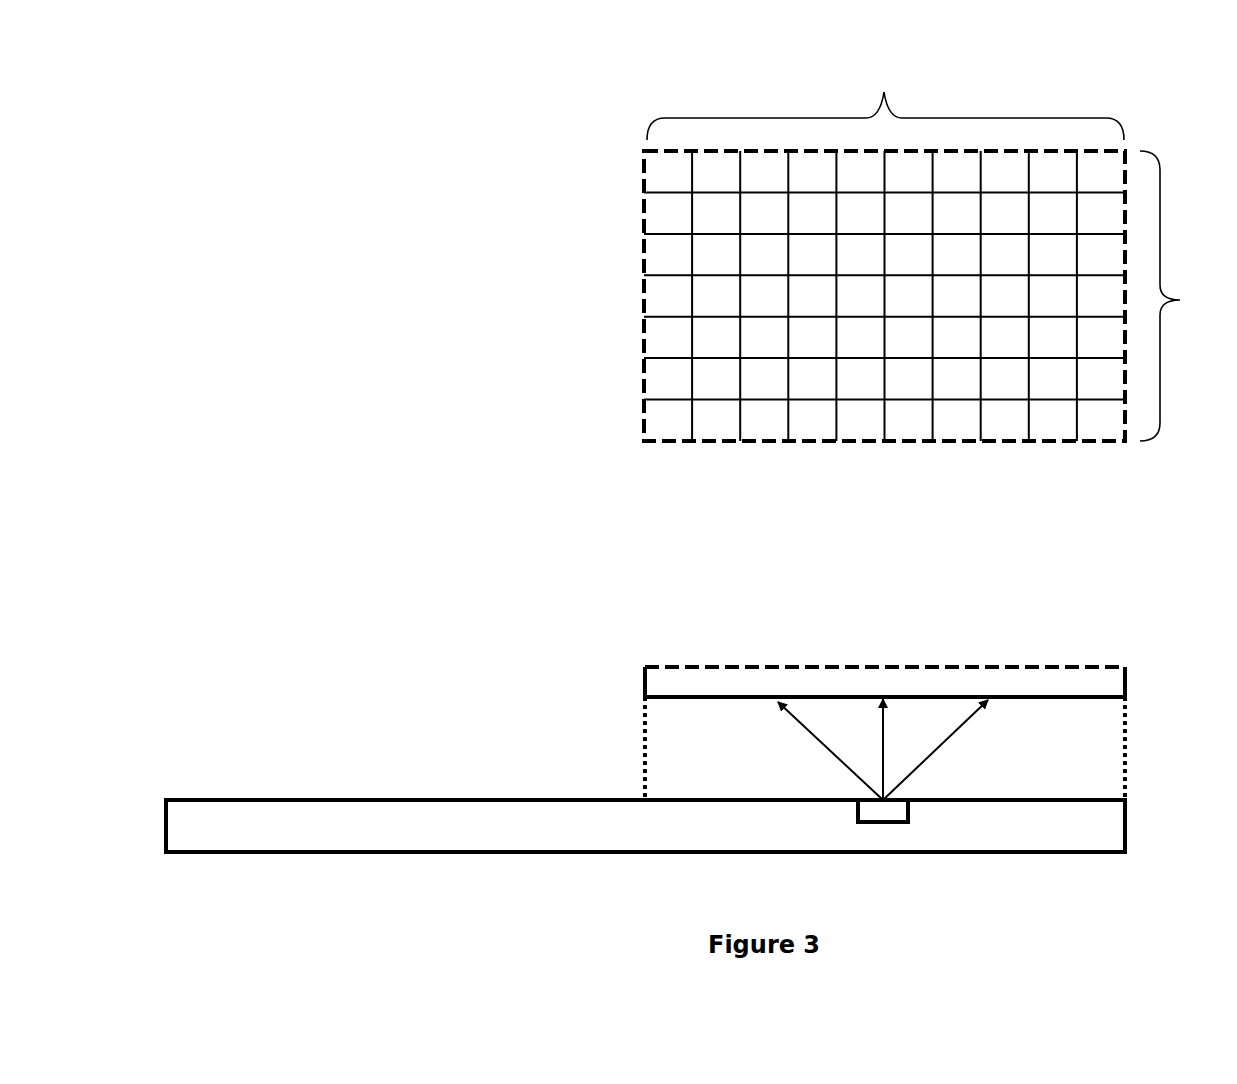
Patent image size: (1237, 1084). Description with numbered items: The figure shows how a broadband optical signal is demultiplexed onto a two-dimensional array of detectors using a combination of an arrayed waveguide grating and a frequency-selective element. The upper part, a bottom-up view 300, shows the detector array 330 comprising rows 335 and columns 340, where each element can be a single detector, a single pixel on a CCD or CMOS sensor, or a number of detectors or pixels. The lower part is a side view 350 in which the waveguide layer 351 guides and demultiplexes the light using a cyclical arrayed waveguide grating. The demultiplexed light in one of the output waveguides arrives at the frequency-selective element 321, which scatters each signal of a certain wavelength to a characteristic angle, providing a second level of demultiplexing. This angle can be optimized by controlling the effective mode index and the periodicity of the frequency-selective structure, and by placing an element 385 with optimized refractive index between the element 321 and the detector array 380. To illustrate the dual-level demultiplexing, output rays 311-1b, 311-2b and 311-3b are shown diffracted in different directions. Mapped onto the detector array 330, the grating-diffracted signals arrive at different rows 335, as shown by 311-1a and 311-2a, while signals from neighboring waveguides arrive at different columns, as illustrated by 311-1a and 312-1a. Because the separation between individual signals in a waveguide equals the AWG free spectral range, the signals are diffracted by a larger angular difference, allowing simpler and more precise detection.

The bottom-up view of detector array 300 is at (410, 95).
The detector array 330 is at (644, 167).
The rows 335 is at (885, 102).
The columns 340 is at (1188, 296).
The detector array signal from waveguide 111 311-1a is at (710, 297).
The detector array signal from waveguide 111 at different row 311-2a is at (762, 298).
The detector array signal from waveguide 112 312-1a is at (712, 335).
The side view 350 is at (332, 450).
The detector array 380 is at (645, 685).
The element with optimized refractive index 385 is at (645, 748).
The waveguide layer 351 is at (338, 800).
The frequency-selective element 321 is at (908, 810).
The output ray 311-1b is at (797, 715).
The output ray 311-2b is at (887, 718).
The output ray 311-3b is at (965, 718).